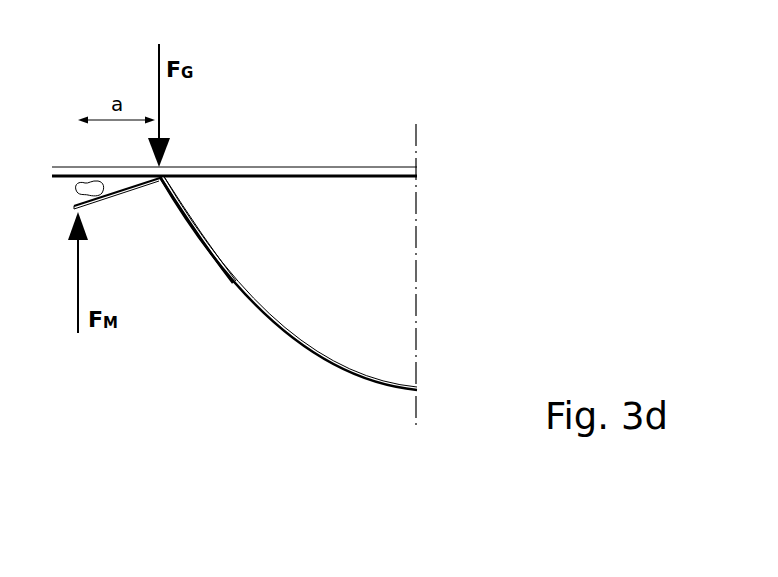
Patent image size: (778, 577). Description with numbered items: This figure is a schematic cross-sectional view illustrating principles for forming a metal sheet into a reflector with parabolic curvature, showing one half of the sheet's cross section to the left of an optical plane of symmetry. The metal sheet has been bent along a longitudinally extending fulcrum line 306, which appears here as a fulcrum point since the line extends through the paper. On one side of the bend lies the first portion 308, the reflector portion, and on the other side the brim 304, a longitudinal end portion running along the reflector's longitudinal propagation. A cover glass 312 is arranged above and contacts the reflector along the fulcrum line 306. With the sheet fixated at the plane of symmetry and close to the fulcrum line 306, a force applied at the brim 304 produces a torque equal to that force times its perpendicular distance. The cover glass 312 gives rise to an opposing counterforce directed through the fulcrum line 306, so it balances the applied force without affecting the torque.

The brim 304 is at (110, 197).
The fulcrum line 306 is at (167, 179).
The first portion 308 is at (283, 327).
The cover glass 312 is at (318, 168).